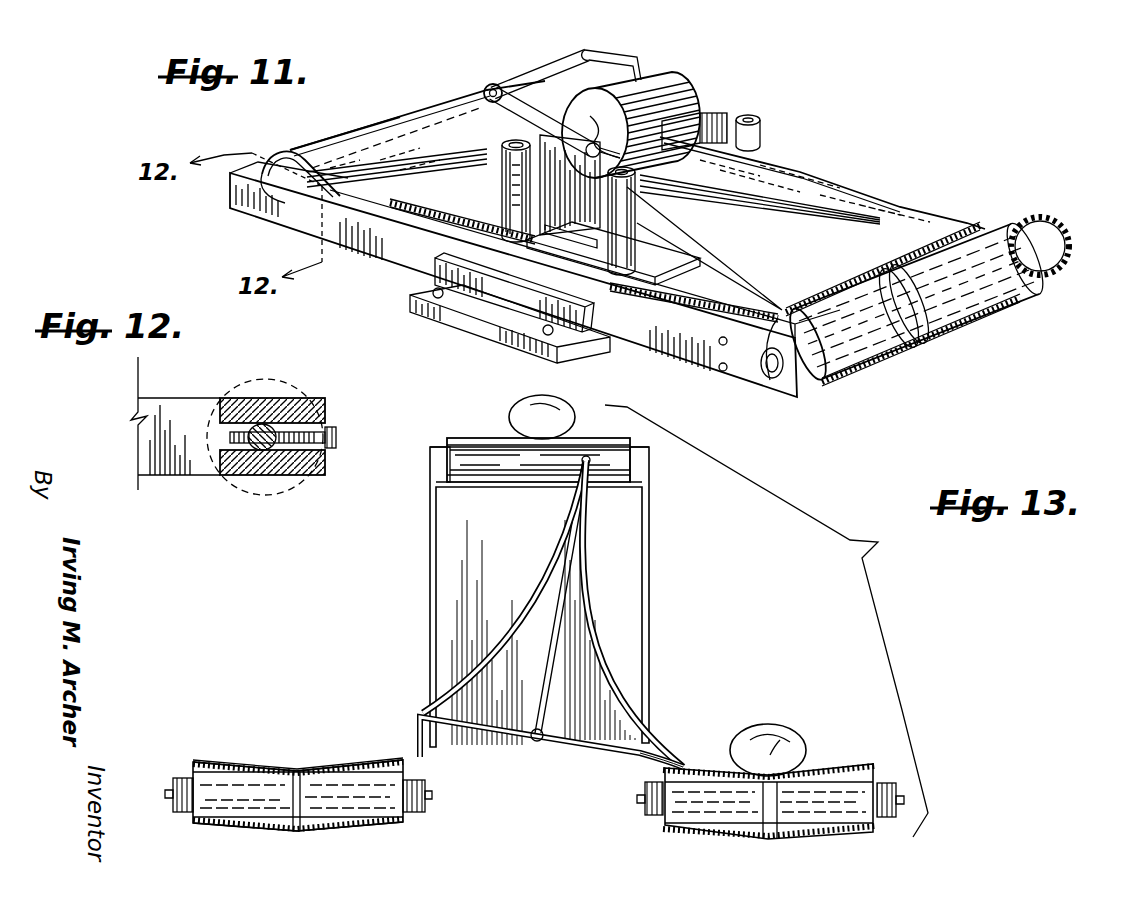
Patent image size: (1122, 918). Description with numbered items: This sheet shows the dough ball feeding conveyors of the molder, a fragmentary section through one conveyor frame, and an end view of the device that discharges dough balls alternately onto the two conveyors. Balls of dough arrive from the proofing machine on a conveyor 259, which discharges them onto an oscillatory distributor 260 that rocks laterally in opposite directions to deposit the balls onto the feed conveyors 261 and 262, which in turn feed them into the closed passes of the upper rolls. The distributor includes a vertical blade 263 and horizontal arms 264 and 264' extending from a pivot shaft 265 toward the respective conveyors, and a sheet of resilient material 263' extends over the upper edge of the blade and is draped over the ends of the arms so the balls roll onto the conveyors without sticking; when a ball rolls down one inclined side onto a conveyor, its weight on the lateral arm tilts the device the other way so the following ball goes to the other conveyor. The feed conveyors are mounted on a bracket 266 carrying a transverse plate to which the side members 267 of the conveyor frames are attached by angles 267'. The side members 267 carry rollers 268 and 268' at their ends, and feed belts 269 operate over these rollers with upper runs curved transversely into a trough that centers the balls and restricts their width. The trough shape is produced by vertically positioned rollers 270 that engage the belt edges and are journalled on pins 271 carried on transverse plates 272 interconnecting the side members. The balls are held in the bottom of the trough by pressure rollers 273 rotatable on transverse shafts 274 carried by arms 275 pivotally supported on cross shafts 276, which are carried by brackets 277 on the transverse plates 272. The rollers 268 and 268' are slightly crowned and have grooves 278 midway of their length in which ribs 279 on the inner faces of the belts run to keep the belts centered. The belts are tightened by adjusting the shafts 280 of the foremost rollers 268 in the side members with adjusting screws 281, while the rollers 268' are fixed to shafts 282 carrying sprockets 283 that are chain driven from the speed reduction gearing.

In FIG. 13, the conveyor 259 is at (462, 437).
In FIG. 13, the oscillatory distributor 260 is at (597, 650).
In FIG. 11, the conveyor 261 is at (878, 214).
In FIG. 13, the conveyor 261 is at (232, 764).
In FIG. 13, the conveyor 262 is at (826, 770).
In FIG. 13, the vertical blade 263 is at (544, 594).
In FIG. 13, the sheet of resilient material 263' is at (563, 587).
In FIG. 13, the horizontal arm 264 is at (522, 723).
In FIG. 13, the horizontal arm 264' is at (664, 738).
In FIG. 13, the pivot shaft 265 is at (536, 752).
In FIG. 11, the bracket 266 is at (440, 319).
In FIG. 11, the side member 267 is at (535, 279).
In FIG. 12, the side member 267 is at (175, 423).
In FIG. 13, the side member 267 is at (508, 819).
In FIG. 11, the angle 267' is at (584, 252).
In FIG. 11, the roller 268 is at (275, 209).
In FIG. 12, the roller 268 is at (266, 426).
In FIG. 13, the roller 268 is at (298, 779).
In FIG. 11, the roller 268' is at (835, 375).
In FIG. 11, the feed belt 269 is at (398, 126).
In FIG. 13, the feed belt 269 is at (205, 760).
In FIG. 11, the vertically positioned roller 270 is at (627, 234).
In FIG. 11, the pin 271 is at (497, 182).
In FIG. 11, the transverse plate 272 is at (432, 266).
In FIG. 11, the pressure roller 273 is at (680, 103).
In FIG. 11, the transverse shaft 274 is at (590, 128).
In FIG. 11, the arm 275 is at (547, 120).
In FIG. 11, the cross shaft 276 is at (532, 82).
In FIG. 11, the bracket 277 is at (604, 63).
In FIG. 11, the groove 278 is at (935, 342).
In FIG. 13, the groove 278 is at (290, 826).
In FIG. 11, the rib 279 is at (885, 262).
In FIG. 13, the rib 279 is at (303, 826).
In FIG. 12, the shaft 280 is at (267, 450).
In FIG. 12, the adjusting screw 281 is at (331, 447).
In FIG. 11, the shaft 282 is at (775, 377).
In FIG. 11, the sprocket 283 is at (1048, 236).